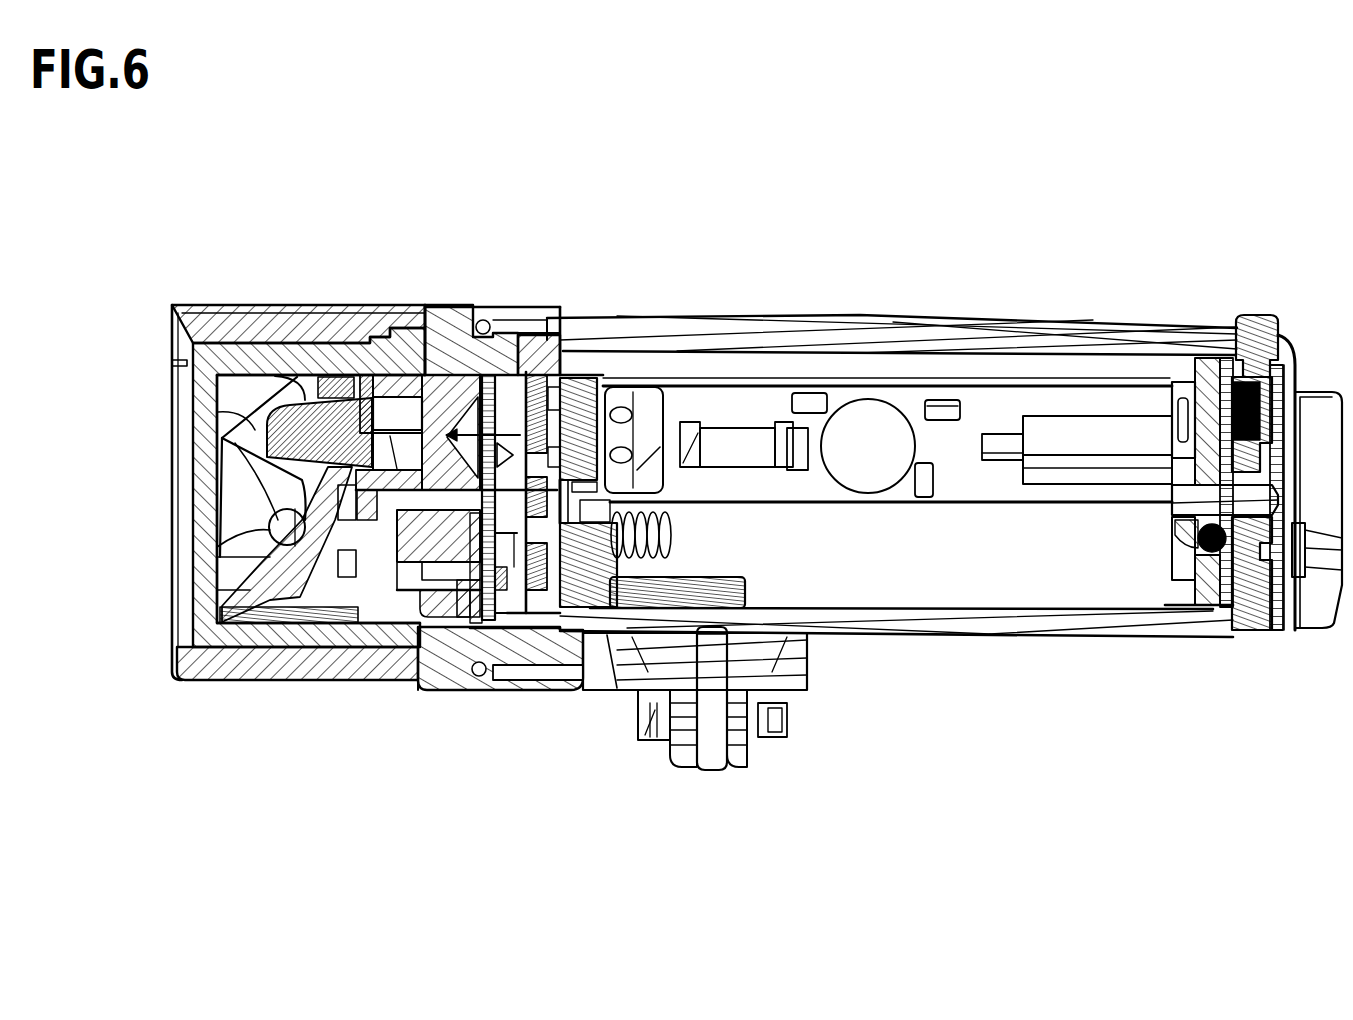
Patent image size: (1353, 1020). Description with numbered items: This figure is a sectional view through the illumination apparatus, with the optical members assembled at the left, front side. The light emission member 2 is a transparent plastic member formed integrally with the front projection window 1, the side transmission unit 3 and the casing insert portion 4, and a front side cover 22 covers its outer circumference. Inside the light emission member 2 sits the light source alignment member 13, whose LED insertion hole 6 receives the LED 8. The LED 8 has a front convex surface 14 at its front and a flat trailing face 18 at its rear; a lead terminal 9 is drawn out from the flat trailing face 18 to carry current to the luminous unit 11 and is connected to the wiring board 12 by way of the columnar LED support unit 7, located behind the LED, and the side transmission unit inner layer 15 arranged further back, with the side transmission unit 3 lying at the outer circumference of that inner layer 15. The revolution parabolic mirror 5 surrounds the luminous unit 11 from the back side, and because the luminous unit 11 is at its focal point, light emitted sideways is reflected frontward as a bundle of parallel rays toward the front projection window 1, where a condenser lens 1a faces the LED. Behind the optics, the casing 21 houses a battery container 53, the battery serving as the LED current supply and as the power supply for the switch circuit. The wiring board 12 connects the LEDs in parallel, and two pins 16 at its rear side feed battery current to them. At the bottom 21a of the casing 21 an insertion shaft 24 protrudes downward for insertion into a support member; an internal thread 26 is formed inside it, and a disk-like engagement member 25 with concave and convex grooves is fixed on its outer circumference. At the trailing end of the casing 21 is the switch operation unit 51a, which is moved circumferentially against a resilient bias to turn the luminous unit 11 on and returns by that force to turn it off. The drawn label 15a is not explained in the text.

The front projection window 1 is at (197, 508).
The condenser lens 1a is at (222, 438).
The light emission member 2 is at (280, 375).
The side transmission unit 3 is at (444, 305).
The casing insert portion 4 is at (540, 335).
The revolution parabolic mirror 5 is at (217, 413).
The LED insertion hole 6 is at (354, 395).
The LED support unit 7 is at (407, 375).
The LED 8 is at (272, 402).
The lead terminal 9 is at (400, 640).
The luminous unit 11 is at (317, 413).
The wiring board 12 is at (488, 627).
The light source alignment member 13 is at (344, 640).
The front convex surface 14 is at (213, 553).
The side transmission unit inner layer 15 is at (461, 330).
The slider engaging portion 15a is at (497, 372).
The pins 16 is at (525, 620).
The flat trailing face 18 is at (381, 397).
The casing 21 is at (863, 340).
The bottom of casing 21a is at (828, 660).
The front side cover 22 is at (212, 305).
The insertion shaft 24 is at (737, 745).
The engagement member 25 is at (657, 720).
The internal thread 26 is at (710, 745).
The switch operation unit 51a is at (1256, 316).
The battery container 53 is at (982, 570).